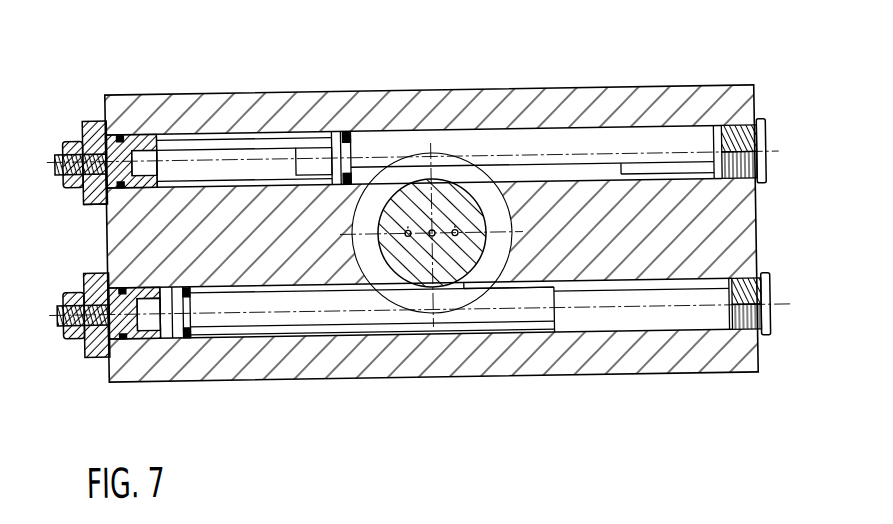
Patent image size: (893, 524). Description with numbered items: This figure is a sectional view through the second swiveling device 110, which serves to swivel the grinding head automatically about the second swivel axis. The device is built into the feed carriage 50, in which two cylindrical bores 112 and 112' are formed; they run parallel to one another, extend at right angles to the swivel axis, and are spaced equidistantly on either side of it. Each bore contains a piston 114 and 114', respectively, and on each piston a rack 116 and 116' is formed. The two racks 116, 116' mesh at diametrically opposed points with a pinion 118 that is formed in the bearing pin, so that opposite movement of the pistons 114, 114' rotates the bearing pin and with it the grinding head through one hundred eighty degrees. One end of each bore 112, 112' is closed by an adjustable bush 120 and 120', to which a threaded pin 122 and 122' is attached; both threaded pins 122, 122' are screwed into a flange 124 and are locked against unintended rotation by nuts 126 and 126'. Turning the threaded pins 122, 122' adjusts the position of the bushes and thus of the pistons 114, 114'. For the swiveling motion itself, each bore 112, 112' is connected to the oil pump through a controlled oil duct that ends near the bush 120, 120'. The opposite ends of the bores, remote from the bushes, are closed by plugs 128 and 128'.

The second swiveling device 110 is at (305, 76).
The feed carriage 50 is at (295, 371).
The cylindrical bore 112 is at (531, 111).
The cylindrical bore 112' is at (597, 355).
The piston 114 is at (365, 114).
The piston 114' is at (373, 358).
The rack 116 is at (339, 112).
The rack 116' is at (373, 359).
The pinion 118 is at (416, 160).
The adjustable bush 120 is at (139, 120).
The adjustable bush 120' is at (150, 358).
The threaded pin 122 is at (89, 133).
The threaded pin 122' is at (97, 315).
The flange 124 is at (93, 202).
The nut 126 is at (74, 137).
The nut 126' is at (78, 345).
The plug 128 is at (768, 147).
The plug 128' is at (779, 301).